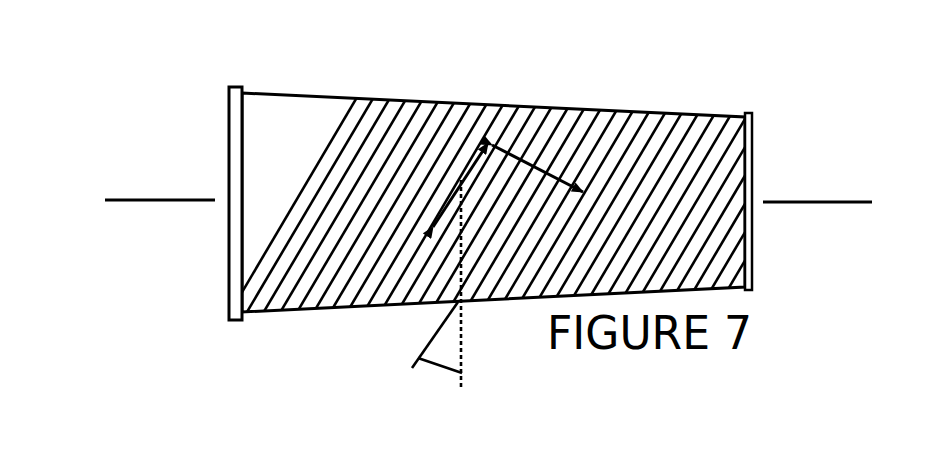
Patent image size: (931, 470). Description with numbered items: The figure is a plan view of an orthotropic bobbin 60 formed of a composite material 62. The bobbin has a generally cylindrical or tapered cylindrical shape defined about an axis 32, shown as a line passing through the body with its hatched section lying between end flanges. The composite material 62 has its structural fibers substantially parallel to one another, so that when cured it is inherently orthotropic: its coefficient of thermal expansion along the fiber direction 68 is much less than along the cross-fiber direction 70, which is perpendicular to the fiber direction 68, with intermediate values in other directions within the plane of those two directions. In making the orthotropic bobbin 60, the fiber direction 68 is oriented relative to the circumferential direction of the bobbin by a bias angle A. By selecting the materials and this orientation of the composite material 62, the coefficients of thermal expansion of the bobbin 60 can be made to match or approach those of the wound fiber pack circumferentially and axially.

The axis 32 is at (455, 200).
The orthotropic bobbin 60 is at (228, 270).
The composite material 62 is at (317, 266).
The fiber direction 68 is at (458, 192).
The cross-fiber direction 70 is at (537, 162).
The bias angle A is at (437, 367).